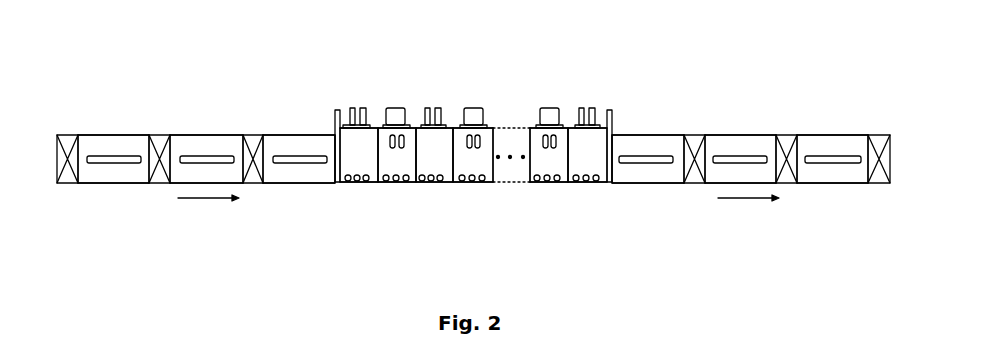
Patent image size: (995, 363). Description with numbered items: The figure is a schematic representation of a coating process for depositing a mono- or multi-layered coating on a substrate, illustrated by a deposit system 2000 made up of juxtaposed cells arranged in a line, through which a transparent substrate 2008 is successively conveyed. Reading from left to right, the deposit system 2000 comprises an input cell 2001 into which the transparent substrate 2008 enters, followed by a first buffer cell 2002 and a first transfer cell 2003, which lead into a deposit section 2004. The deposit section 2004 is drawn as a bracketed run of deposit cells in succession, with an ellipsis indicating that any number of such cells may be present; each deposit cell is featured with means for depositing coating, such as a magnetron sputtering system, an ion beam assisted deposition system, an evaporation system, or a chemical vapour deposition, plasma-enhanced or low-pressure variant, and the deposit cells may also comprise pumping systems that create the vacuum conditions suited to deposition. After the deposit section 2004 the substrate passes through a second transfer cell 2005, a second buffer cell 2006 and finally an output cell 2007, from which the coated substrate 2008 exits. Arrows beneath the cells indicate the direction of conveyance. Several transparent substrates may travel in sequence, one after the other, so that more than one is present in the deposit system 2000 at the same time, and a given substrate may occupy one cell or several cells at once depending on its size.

The deposit system 2000 is at (229, 56).
The input cell 2001 is at (111, 134).
The first buffer cell 2002 is at (209, 134).
The first transfer cell 2003 is at (301, 134).
The deposit section 2004 is at (612, 88).
The second transfer cell 2005 is at (653, 134).
The second buffer cell 2006 is at (741, 134).
The output cell 2007 is at (837, 134).
The transparent substrate 2008 is at (110, 165).